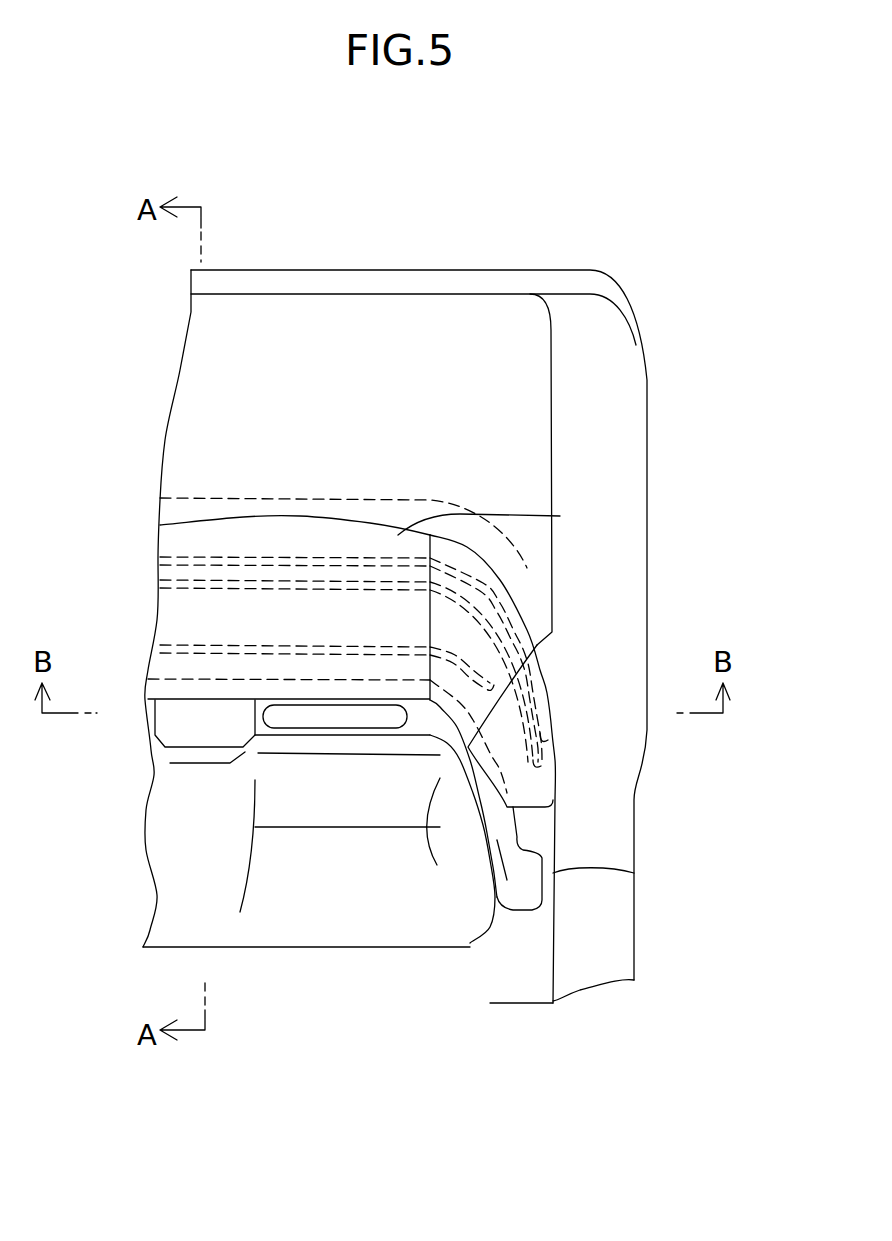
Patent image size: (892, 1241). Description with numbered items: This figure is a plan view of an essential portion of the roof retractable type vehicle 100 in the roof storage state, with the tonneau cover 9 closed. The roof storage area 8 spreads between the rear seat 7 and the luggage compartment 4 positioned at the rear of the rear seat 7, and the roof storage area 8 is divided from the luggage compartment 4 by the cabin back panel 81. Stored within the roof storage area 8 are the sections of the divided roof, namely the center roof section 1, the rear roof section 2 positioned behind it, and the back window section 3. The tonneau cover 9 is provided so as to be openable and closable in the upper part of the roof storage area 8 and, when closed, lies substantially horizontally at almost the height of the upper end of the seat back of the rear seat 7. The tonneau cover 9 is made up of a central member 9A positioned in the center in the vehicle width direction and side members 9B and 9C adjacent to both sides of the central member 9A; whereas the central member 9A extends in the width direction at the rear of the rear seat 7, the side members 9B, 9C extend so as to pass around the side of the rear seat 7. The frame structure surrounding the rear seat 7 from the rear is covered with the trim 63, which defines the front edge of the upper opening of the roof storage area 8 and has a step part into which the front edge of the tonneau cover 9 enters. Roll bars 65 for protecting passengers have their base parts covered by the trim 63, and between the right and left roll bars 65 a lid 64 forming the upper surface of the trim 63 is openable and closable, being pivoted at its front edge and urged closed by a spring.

The roof retractable type vehicle 100 is at (652, 380).
The luggage compartment 4 is at (382, 432).
The cabin back panel 81 is at (197, 497).
The roof storage area 8 is at (357, 632).
The rear roof section 2 is at (193, 558).
The back window section 3 is at (193, 588).
The center roof section 1 is at (193, 643).
The tonneau cover 9 is at (730, 495).
The central member 9A is at (560, 516).
The side member 9B is at (513, 608).
The side member 9C is at (540, 688).
The lid 64 is at (175, 720).
The roll bar 65 is at (278, 720).
The rear seat 7 is at (305, 925).
The trim 63 is at (498, 827).